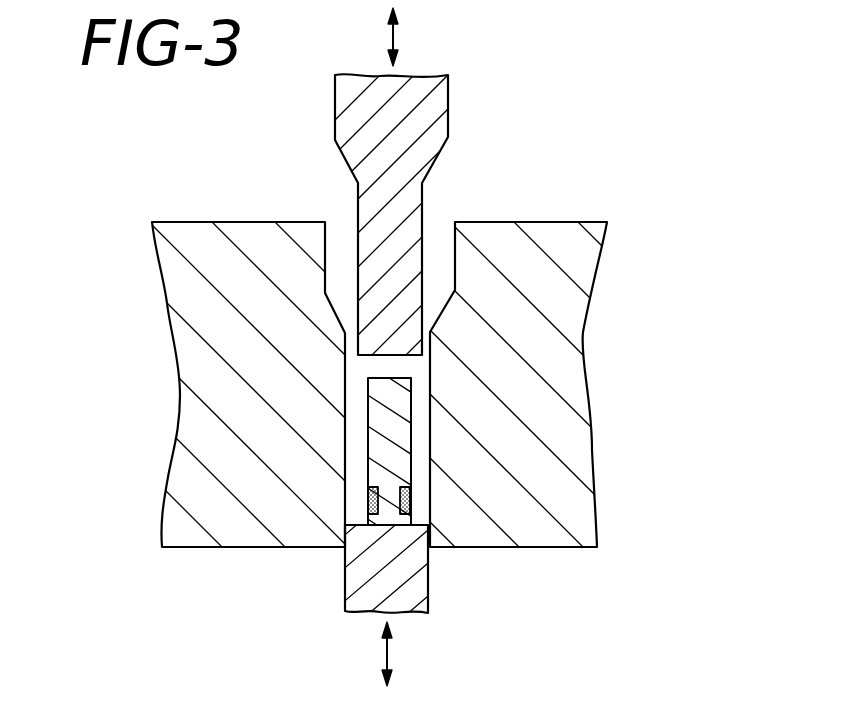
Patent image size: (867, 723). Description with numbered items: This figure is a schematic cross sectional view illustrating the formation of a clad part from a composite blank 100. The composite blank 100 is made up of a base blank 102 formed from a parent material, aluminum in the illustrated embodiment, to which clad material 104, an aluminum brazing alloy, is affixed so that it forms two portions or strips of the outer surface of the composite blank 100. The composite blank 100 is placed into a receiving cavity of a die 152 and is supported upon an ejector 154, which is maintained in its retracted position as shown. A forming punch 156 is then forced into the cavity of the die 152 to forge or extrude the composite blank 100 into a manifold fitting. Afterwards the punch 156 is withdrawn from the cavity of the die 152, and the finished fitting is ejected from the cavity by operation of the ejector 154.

The composite blank 100 is at (364, 456).
The base blank 102 is at (412, 437).
The clad material 104 is at (367, 498).
The die 152 is at (158, 247).
The ejector 154 is at (423, 577).
The forming punch 156 is at (443, 100).